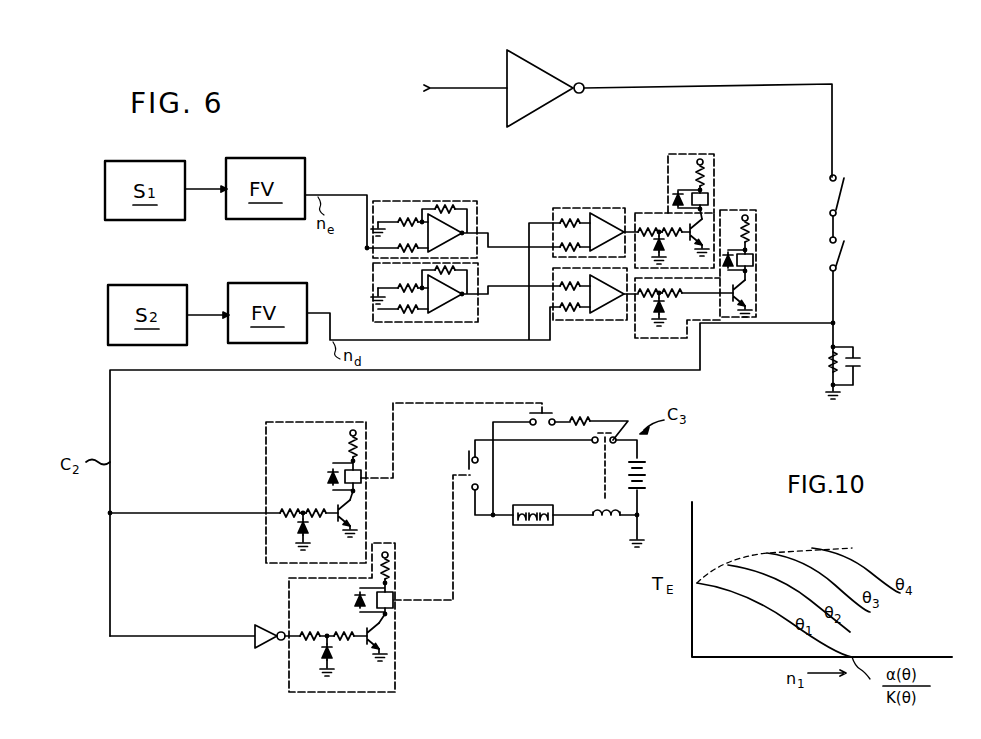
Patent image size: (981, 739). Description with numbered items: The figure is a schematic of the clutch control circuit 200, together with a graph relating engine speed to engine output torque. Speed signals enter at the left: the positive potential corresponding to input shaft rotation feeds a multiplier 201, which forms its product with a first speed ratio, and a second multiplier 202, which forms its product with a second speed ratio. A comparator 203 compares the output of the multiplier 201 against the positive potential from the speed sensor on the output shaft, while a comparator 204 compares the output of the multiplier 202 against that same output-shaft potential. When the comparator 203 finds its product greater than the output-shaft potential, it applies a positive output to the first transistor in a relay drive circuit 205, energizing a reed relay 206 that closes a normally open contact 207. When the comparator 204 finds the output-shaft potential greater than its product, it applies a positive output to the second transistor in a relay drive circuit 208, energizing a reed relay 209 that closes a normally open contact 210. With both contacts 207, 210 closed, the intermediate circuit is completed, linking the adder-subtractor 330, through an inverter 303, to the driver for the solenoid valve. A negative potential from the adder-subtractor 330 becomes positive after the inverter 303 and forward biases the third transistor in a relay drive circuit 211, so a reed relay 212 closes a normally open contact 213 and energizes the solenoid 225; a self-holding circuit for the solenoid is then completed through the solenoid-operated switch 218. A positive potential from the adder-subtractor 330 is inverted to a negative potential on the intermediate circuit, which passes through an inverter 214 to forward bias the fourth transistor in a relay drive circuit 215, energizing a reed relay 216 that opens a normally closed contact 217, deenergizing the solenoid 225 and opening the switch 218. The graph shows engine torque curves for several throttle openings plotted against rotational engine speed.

The clutch control circuit 200 is at (378, 154).
The multiplier 201 is at (398, 200).
The multiplier 202 is at (478, 312).
The comparator 203 is at (583, 208).
The comparator 204 is at (578, 322).
The relay drive circuit 205 is at (689, 153).
The reed relay 206 is at (708, 200).
The normally open contact 207 is at (847, 200).
The relay drive circuit 208 is at (752, 274).
The reed relay 209 is at (750, 258).
The normally open contact 210 is at (847, 255).
The relay drive circuit 211 is at (313, 424).
The reed relay 212 is at (362, 482).
The normally open contact 213 is at (550, 413).
The inverter 214 is at (267, 623).
The relay drive circuit 215 is at (352, 690).
The reed relay 216 is at (394, 592).
The normally closed contact 217 is at (469, 458).
The solenoid-operated switch 218 is at (605, 464).
The solenoid 225 is at (535, 505).
The inverter 303 is at (546, 80).
The adder-subtractor 330 is at (437, 84).